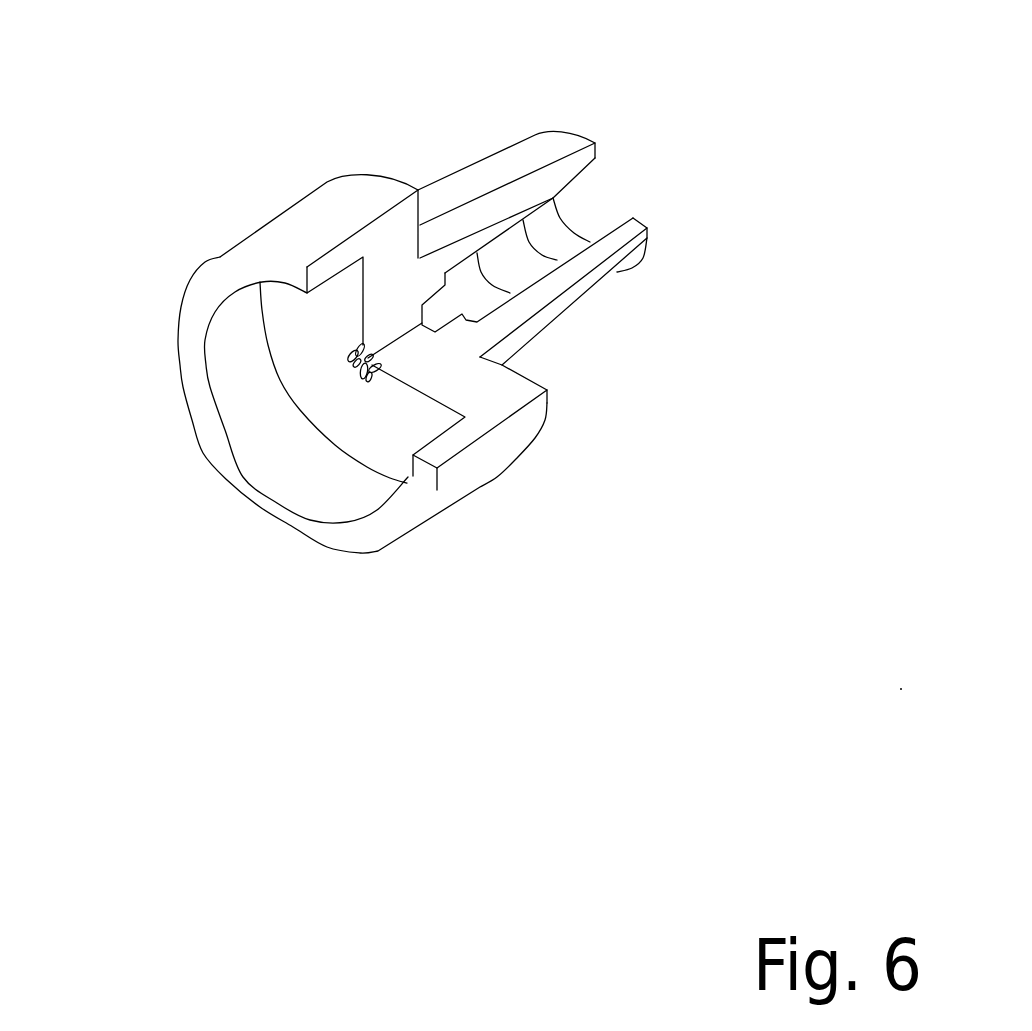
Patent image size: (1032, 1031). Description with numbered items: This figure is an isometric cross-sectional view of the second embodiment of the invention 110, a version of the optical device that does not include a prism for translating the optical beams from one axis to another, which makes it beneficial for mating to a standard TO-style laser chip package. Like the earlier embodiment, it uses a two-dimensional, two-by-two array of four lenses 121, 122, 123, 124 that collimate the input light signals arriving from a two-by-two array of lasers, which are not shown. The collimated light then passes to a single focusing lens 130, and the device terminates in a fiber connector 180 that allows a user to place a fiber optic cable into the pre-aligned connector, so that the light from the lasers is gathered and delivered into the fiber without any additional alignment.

The second embodiment of the invention 110 is at (353, 115).
The fiber connector 180 is at (532, 165).
The single focusing lens 130 is at (427, 310).
The lens 123 is at (347, 358).
The lens 124 is at (360, 375).
The lens 122 is at (373, 377).
The lens 121 is at (372, 362).